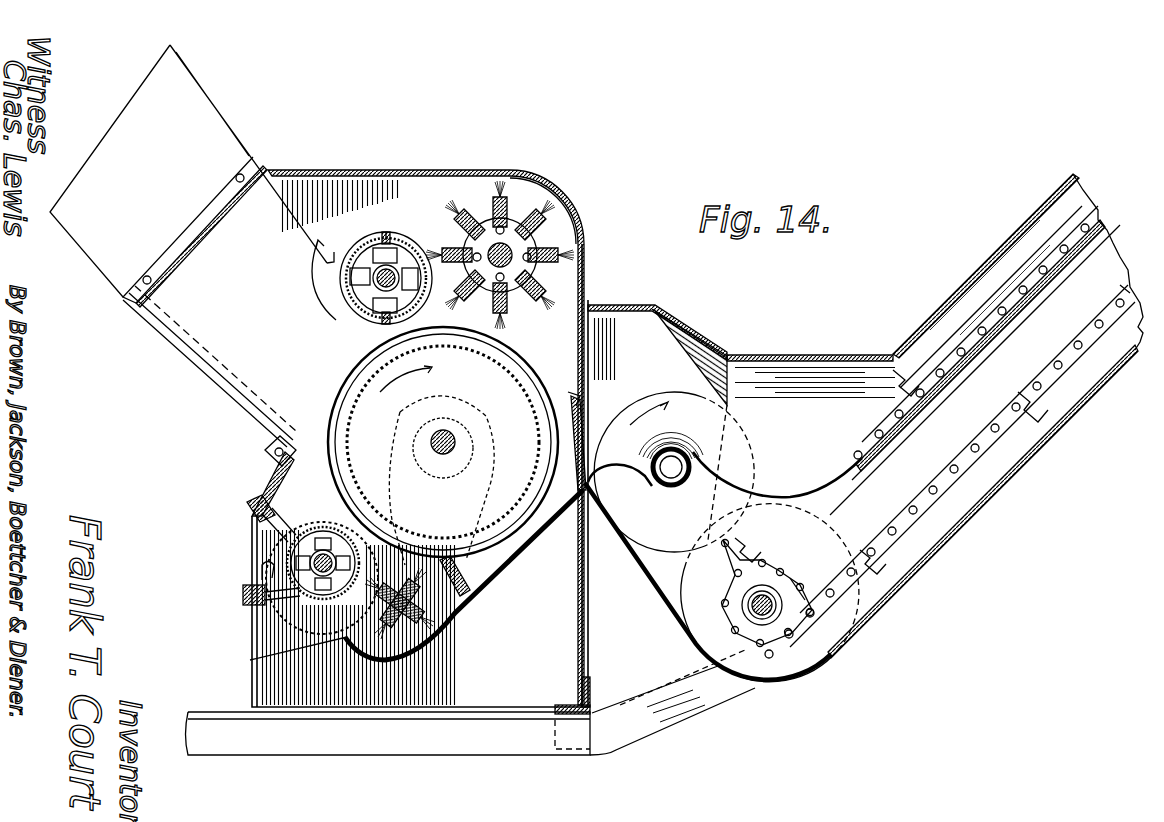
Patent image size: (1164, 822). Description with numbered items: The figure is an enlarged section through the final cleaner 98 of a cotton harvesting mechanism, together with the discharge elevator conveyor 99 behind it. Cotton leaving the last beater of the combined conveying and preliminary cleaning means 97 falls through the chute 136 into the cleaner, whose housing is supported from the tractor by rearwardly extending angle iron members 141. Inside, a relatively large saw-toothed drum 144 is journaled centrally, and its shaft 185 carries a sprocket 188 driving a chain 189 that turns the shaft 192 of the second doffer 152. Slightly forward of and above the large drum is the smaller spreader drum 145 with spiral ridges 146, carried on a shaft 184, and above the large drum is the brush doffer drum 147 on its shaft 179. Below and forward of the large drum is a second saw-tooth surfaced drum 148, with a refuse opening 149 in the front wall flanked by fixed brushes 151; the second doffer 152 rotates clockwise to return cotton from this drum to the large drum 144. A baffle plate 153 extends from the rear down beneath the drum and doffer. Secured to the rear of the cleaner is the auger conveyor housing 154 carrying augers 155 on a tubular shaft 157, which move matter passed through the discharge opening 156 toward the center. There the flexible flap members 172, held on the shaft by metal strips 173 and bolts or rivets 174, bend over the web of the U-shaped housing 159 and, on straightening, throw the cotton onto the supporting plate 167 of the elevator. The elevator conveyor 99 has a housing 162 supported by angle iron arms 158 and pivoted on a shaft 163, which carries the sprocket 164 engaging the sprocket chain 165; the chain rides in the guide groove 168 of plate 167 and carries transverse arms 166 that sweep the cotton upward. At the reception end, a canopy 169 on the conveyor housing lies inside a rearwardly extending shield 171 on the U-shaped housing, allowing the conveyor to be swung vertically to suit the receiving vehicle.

The combined conveying and preliminary cleaning means 97 is at (150, 70).
The final cleaner 98 is at (470, 172).
The discharge elevator conveyor 99 is at (1025, 226).
The chute 136 is at (100, 255).
The angle iron members 141 is at (192, 758).
The drum 144 is at (330, 350).
The drum 145 is at (342, 292).
The spiral ridges 146 is at (385, 232).
The doffer drum 147 is at (458, 239).
The second saw-tooth surfaced drum 148 is at (290, 548).
The refuse opening 149 is at (262, 568).
The fixed brushes 151 is at (250, 520).
The second doffer 152 is at (462, 576).
The baffle plate 153 is at (490, 582).
The auger conveyor housing 154 is at (645, 310).
The auger 155 is at (650, 392).
The discharge opening 156 is at (580, 335).
The tubular shaft 157 is at (155, 333).
The angle iron arms 158 is at (560, 205).
The U-shaped housing 159 is at (665, 600).
The housing 162 is at (1060, 445).
The shaft 163 is at (768, 628).
The sprocket 164 is at (814, 577).
The sprocket chain 165 is at (900, 420).
The transverse arms 166 is at (935, 400).
The supporting plate 167 is at (1005, 337).
The guide groove 168 is at (1045, 300).
The canopy 169 is at (845, 360).
The shield 171 is at (740, 350).
The flexible flap members 172 is at (635, 515).
The metal strips 173 is at (680, 455).
The bolts or rivets 174 is at (674, 482).
The shaft 179 is at (512, 250).
The shaft 184 is at (395, 246).
The shaft 185 is at (444, 453).
The sprocket 188 is at (441, 480).
The chain 189 is at (443, 477).
The shaft 192 is at (440, 618).